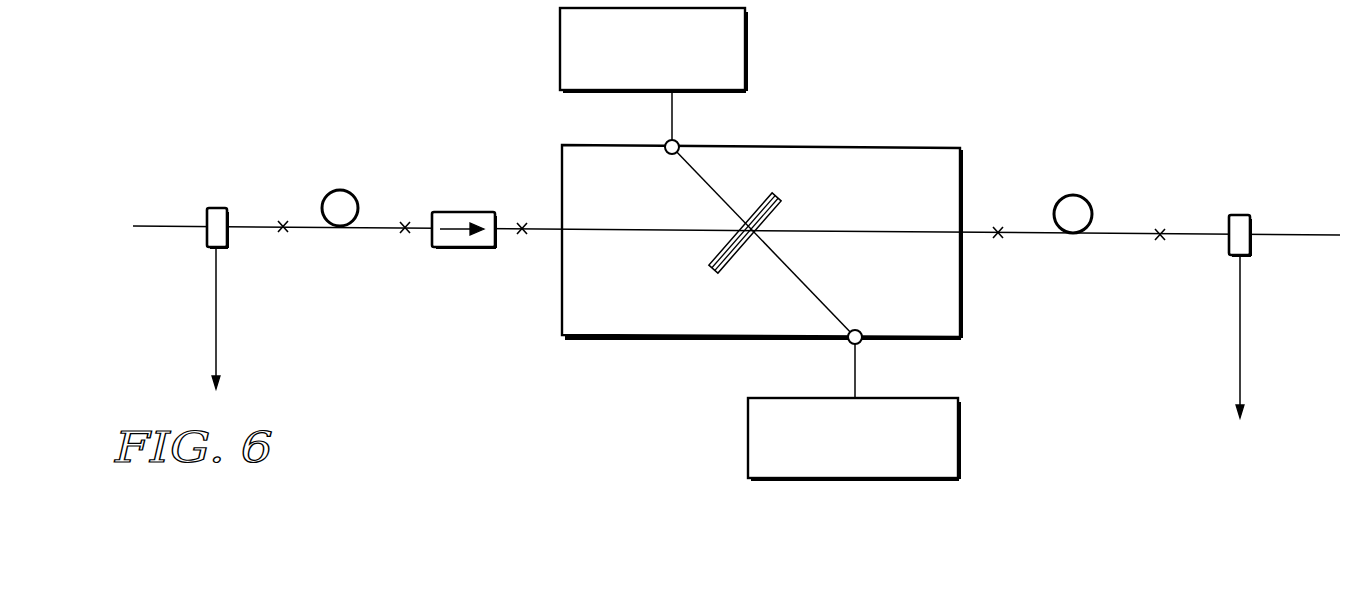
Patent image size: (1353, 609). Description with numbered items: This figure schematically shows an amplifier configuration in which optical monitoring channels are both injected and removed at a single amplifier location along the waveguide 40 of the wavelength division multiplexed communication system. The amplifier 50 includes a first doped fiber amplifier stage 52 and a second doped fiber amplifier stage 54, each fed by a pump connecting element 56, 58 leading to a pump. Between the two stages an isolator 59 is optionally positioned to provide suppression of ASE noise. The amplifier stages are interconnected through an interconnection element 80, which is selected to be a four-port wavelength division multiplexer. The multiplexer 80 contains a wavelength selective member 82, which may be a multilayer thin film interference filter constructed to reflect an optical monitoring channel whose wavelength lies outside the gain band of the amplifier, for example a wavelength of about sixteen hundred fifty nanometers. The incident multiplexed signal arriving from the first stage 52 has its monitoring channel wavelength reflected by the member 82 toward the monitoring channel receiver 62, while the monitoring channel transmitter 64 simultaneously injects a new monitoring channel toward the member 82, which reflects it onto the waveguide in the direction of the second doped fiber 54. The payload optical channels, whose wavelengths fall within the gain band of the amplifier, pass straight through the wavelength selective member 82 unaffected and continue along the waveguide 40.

The waveguide 40 is at (160, 226).
The optical amplifier 50 is at (565, 392).
The first doped fiber amplifier stage 52 is at (347, 192).
The second doped fiber amplifier stage 54 is at (1077, 196).
The pump connecting element 56 is at (217, 208).
The pump connecting element 58 is at (1237, 213).
The isolator 59 is at (462, 210).
The monitoring channel receiver 62 is at (717, 1).
The monitoring channel transmitter 64 is at (923, 398).
The interconnection element 80 is at (897, 149).
The wavelength selective member 82 is at (712, 262).